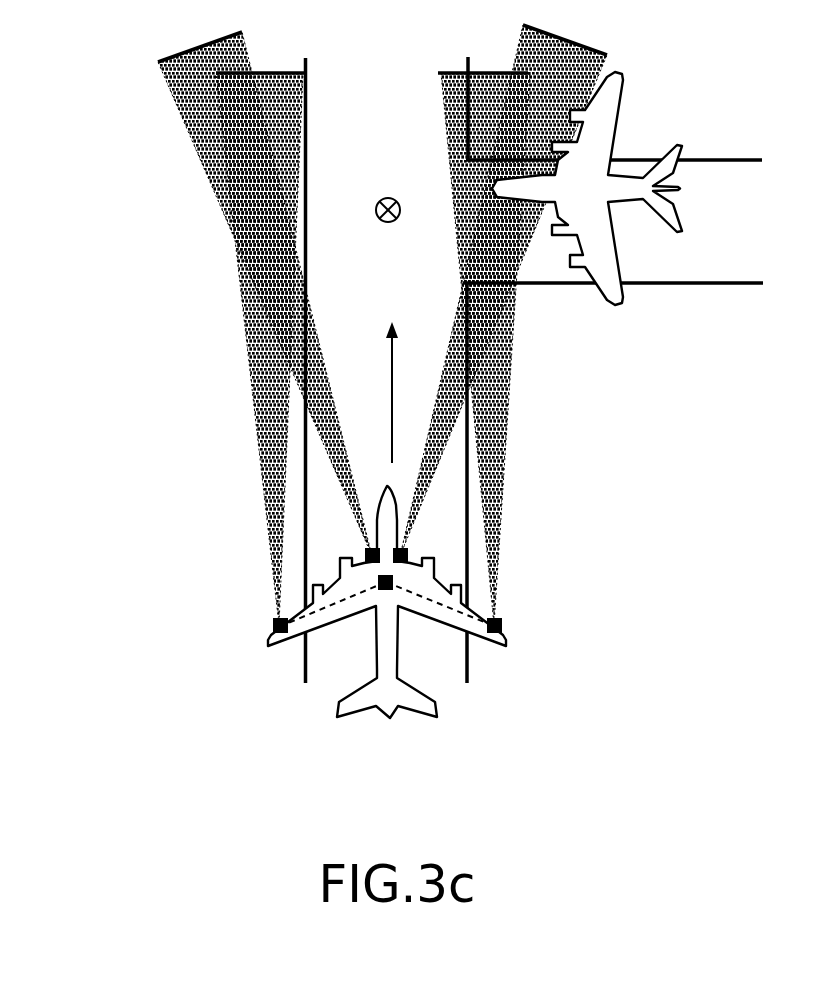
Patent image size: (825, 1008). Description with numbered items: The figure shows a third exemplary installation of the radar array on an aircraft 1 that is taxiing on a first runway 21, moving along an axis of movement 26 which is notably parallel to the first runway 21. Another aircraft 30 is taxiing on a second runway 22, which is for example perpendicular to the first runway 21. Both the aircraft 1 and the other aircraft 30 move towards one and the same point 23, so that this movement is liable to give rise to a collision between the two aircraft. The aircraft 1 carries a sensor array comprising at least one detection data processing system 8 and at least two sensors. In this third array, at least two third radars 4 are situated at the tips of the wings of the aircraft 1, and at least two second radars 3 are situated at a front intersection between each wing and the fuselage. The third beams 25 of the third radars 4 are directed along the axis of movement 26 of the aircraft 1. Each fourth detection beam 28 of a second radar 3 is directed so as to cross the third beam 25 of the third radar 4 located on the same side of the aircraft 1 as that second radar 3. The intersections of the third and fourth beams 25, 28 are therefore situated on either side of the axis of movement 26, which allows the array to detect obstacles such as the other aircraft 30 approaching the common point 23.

The aircraft 1 is at (372, 698).
The second radar 3 is at (365, 555).
The third radar 4 is at (275, 628).
The detection data processing system 8 is at (386, 590).
The first runway 21 is at (457, 473).
The second runway 22 is at (683, 265).
The point 23 is at (379, 201).
The third beam 25 is at (270, 498).
The axis of movement 26 is at (390, 400).
The fourth detection beam 28 is at (340, 442).
The other aircraft 30 is at (597, 263).